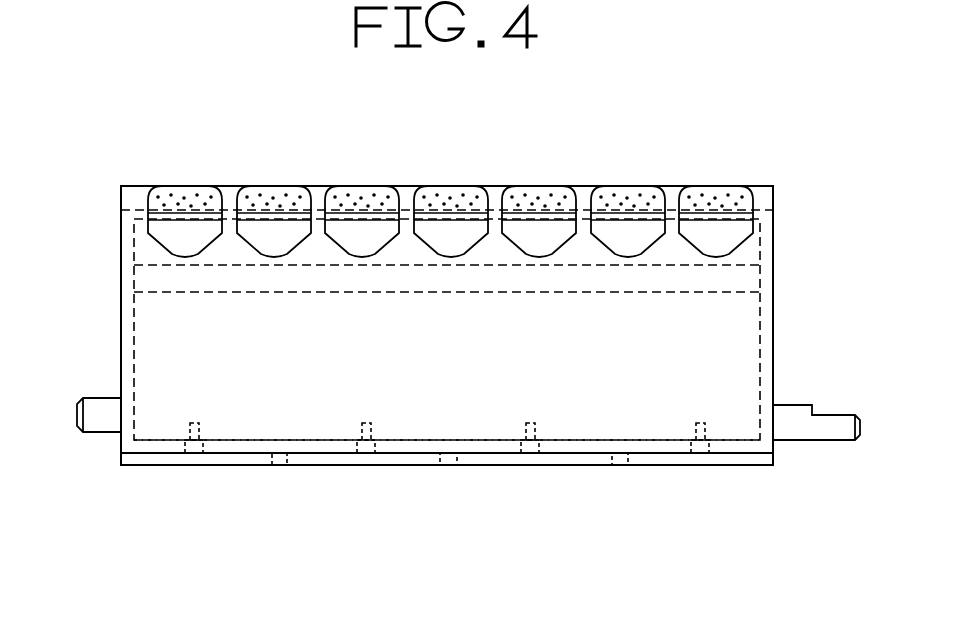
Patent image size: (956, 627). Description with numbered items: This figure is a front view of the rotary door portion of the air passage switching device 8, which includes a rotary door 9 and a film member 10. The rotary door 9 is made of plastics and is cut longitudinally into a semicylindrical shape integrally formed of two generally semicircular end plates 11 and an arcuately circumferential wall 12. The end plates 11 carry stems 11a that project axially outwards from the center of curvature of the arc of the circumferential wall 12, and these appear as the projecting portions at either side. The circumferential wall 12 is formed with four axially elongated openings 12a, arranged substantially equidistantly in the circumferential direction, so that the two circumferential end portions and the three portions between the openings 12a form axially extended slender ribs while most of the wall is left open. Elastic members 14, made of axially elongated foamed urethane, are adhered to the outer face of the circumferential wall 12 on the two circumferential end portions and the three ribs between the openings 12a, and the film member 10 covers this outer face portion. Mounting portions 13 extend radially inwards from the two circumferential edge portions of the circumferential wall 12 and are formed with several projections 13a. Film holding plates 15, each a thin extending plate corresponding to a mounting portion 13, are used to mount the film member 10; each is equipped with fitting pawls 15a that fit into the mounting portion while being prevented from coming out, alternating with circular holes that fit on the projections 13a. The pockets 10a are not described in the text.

The air passage switching device 8 is at (628, 176).
The rotary door 9 is at (112, 360).
The film member 10 is at (735, 345).
The pockets 10a is at (258, 244).
The end plates 11 is at (134, 328).
The stems 11a is at (97, 418).
The circumferential wall 12 is at (306, 280).
The openings 12a is at (442, 216).
The mounting portions 13 is at (250, 439).
The projections 13a is at (282, 466).
The elastic members 14 is at (188, 200).
The film holding plates 15 is at (388, 458).
The fitting pawls 15a is at (199, 423).